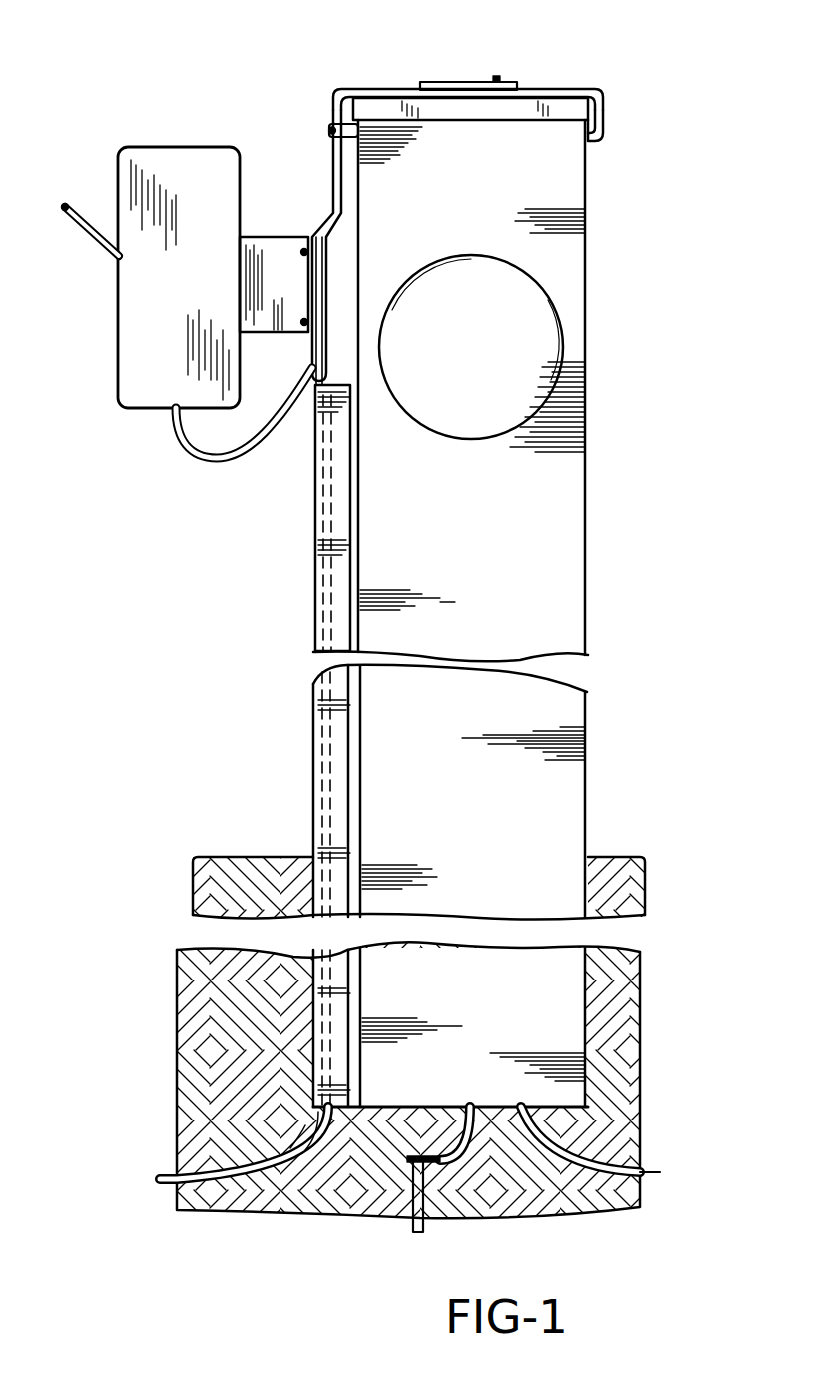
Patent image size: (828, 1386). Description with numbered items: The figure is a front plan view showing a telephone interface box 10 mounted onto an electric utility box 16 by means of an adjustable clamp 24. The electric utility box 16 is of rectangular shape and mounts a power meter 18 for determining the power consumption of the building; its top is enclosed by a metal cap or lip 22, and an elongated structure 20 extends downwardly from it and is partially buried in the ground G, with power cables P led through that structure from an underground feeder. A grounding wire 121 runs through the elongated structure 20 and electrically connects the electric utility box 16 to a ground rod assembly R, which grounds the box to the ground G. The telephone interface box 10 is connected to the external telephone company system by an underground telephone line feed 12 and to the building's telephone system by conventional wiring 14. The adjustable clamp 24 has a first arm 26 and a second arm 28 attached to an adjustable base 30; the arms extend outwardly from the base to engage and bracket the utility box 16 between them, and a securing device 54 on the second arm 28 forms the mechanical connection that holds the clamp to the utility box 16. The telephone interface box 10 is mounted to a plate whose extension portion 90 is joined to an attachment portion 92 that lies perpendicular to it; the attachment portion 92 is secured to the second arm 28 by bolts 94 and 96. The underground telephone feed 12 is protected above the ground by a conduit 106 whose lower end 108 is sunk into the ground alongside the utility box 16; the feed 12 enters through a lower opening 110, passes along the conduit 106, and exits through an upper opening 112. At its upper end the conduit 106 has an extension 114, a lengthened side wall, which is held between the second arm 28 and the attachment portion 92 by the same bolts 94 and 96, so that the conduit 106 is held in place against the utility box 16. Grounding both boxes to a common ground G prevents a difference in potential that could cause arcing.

The telephone interface box 10 is at (214, 271).
The underground telephone line feed 12 is at (172, 1176).
The conventional wiring 14 is at (64, 204).
The electric utility box 16 is at (612, 312).
The power meter 18 is at (482, 320).
The elongated structure 20 is at (522, 577).
The metal cap or lip 22 is at (365, 106).
The adjustable clamp 24 is at (638, 48).
The first arm 26 is at (607, 119).
The second arm 28 is at (333, 98).
The adjustable base 30 is at (443, 81).
The securing device 54 is at (314, 133).
The extension portion 90 is at (295, 291).
The attachment portion 92 is at (306, 237).
The bolt 94 is at (302, 252).
The bolt 96 is at (300, 330).
The conduit 106 is at (313, 547).
The lower end 108 is at (315, 1095).
The lower opening 110 is at (336, 1118).
The upper opening 112 is at (343, 375).
The extension 114 is at (312, 358).
The grounding wire 121 is at (462, 1148).
The ground G is at (258, 1045).
The power cables P is at (660, 1173).
The ground rod assembly R is at (409, 1192).